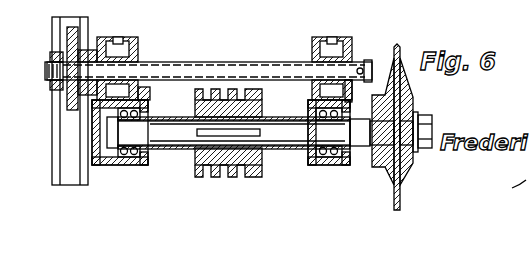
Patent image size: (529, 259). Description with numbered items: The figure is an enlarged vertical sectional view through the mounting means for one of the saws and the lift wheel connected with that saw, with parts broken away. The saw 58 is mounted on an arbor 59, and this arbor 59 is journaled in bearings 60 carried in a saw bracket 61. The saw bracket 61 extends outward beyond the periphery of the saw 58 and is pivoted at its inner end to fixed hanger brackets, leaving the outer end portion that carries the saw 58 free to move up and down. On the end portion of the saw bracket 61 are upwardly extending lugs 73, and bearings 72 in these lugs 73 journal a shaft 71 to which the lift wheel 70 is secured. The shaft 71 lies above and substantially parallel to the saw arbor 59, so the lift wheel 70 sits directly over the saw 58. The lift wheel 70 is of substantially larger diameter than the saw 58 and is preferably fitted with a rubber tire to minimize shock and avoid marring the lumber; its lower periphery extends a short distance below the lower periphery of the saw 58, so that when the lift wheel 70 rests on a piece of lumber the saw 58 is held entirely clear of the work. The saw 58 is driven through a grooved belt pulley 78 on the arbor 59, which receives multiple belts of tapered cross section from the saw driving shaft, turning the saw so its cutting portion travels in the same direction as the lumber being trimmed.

The saw 58 is at (400, 198).
The arbor 59 is at (287, 132).
The bearings 60 is at (128, 166).
The saw bracket 61 is at (147, 166).
The lift wheel 70 is at (58, 178).
The shaft 71 is at (232, 64).
The bearings 72 is at (146, 58).
The lugs 73 is at (147, 47).
The grooved belt pulley 78 is at (237, 172).